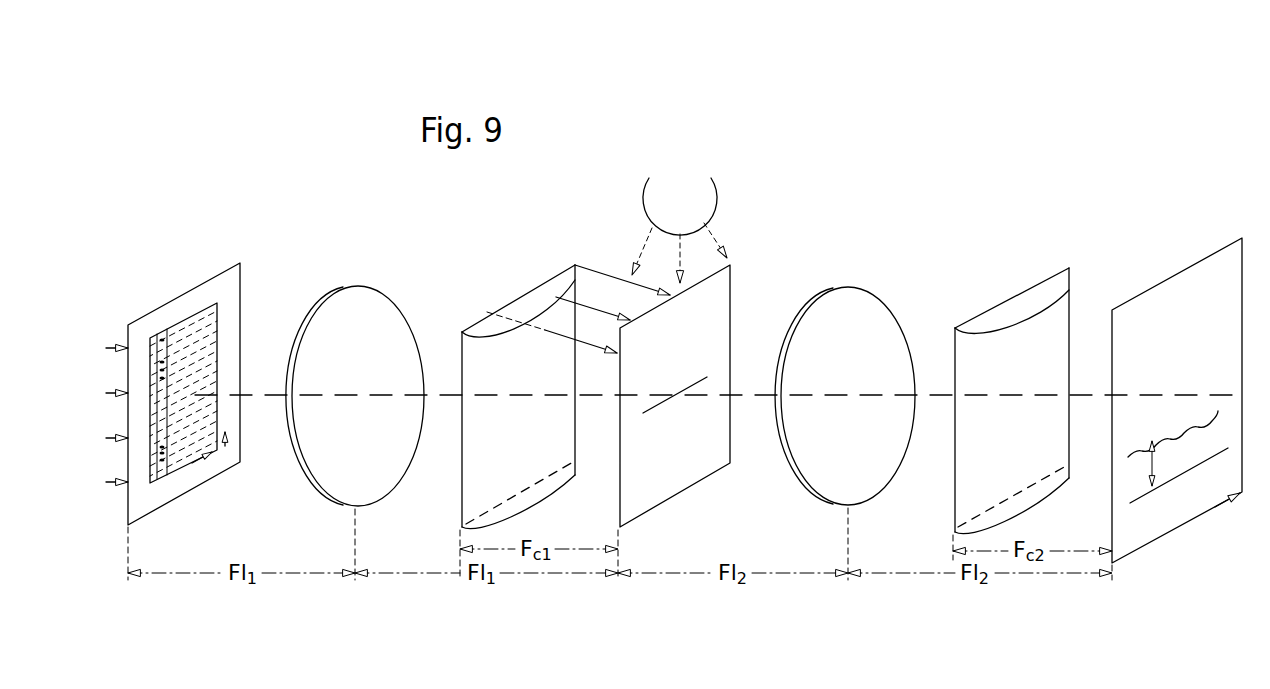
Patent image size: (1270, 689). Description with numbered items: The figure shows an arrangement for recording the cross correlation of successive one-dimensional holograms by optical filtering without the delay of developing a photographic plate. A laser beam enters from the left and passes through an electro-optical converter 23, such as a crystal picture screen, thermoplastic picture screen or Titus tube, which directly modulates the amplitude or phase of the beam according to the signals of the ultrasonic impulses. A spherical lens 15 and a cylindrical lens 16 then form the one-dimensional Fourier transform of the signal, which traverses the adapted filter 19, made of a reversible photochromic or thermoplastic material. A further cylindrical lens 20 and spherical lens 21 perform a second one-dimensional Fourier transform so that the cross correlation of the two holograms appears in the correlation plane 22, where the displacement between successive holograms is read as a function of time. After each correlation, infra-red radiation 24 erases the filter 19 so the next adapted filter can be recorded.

The electro-optical converter 23 is at (185, 292).
The spherical lens 15 is at (355, 287).
The cylindrical lens 16 is at (530, 290).
The infra-red radiation 24 is at (679, 212).
The adapted filter 19 is at (725, 289).
The spherical lens 21 is at (830, 290).
The cylindrical lens 20 is at (1005, 293).
The correlation plane 22 is at (1156, 291).